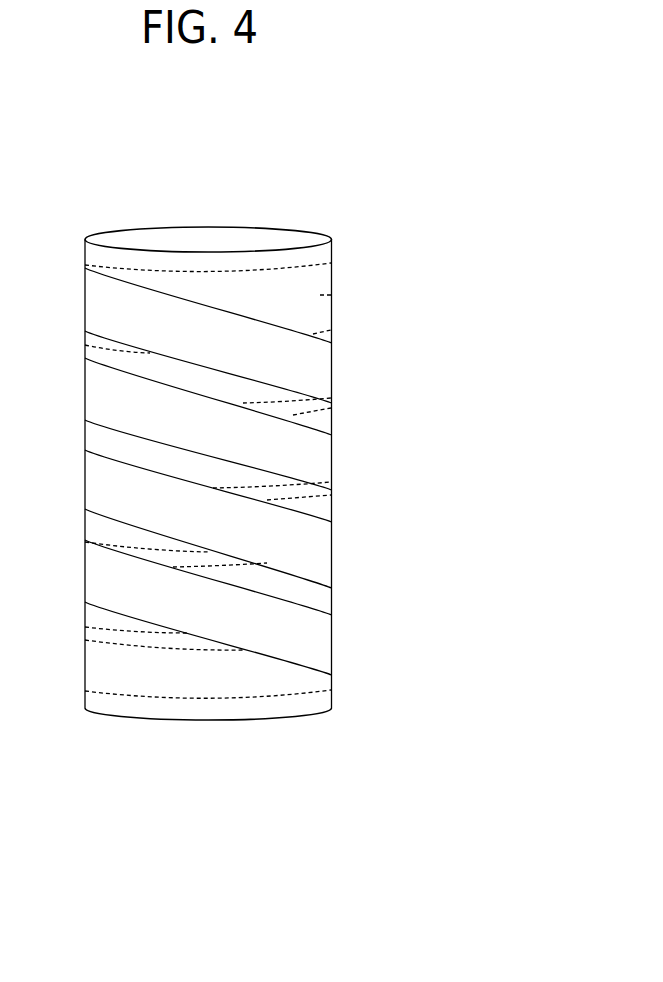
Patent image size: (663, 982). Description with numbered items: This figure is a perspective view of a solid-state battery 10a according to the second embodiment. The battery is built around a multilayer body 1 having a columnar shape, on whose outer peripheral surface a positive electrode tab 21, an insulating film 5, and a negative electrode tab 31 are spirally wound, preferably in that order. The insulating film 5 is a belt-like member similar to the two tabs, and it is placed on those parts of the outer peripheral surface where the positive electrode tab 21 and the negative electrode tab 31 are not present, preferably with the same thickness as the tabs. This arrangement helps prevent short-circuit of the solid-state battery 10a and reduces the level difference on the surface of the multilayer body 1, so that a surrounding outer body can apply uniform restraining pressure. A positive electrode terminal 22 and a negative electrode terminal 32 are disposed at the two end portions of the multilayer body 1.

The multilayer body 1 is at (106, 208).
The solid-state battery 10a is at (317, 163).
The positive electrode terminal 22 is at (175, 238).
The insulating film 5 is at (332, 295).
The positive electrode tab 21 is at (332, 373).
The negative electrode tab 31 is at (332, 462).
The negative electrode terminal 32 is at (210, 722).